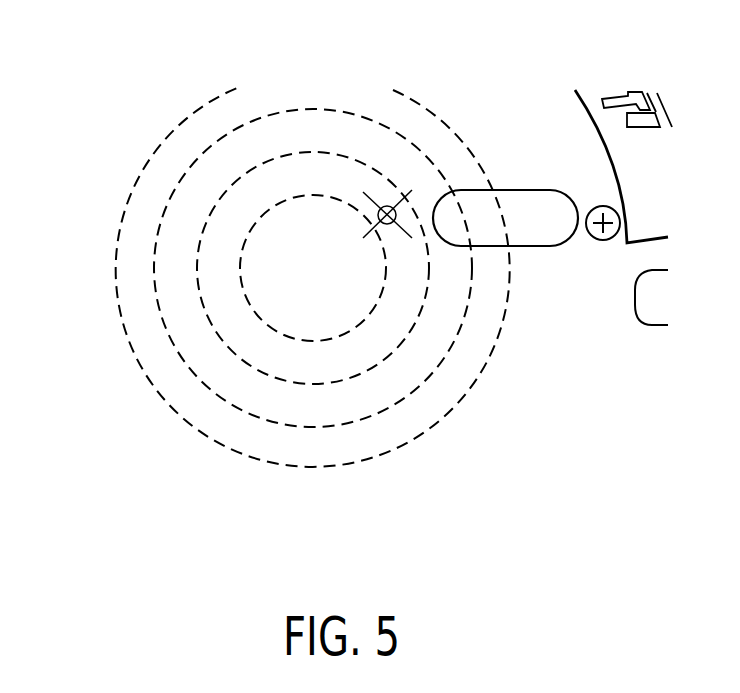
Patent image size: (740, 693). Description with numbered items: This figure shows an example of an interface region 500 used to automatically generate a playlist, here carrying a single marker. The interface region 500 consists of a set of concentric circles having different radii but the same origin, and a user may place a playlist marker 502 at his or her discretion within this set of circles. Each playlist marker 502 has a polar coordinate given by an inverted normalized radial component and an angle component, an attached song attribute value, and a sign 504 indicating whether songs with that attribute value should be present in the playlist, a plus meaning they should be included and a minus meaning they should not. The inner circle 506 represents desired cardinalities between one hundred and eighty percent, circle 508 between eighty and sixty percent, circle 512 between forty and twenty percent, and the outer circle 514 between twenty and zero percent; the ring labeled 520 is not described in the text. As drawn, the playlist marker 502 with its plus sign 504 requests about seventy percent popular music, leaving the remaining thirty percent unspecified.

The interface region 500 is at (309, 253).
The playlist marker 502 is at (386, 206).
The sign 504 is at (600, 207).
The inner circle 506 is at (320, 313).
The circle 508 is at (353, 357).
The second ring zone 520 is at (438, 343).
The circle 512 is at (447, 398).
The outer circle 514 is at (145, 432).